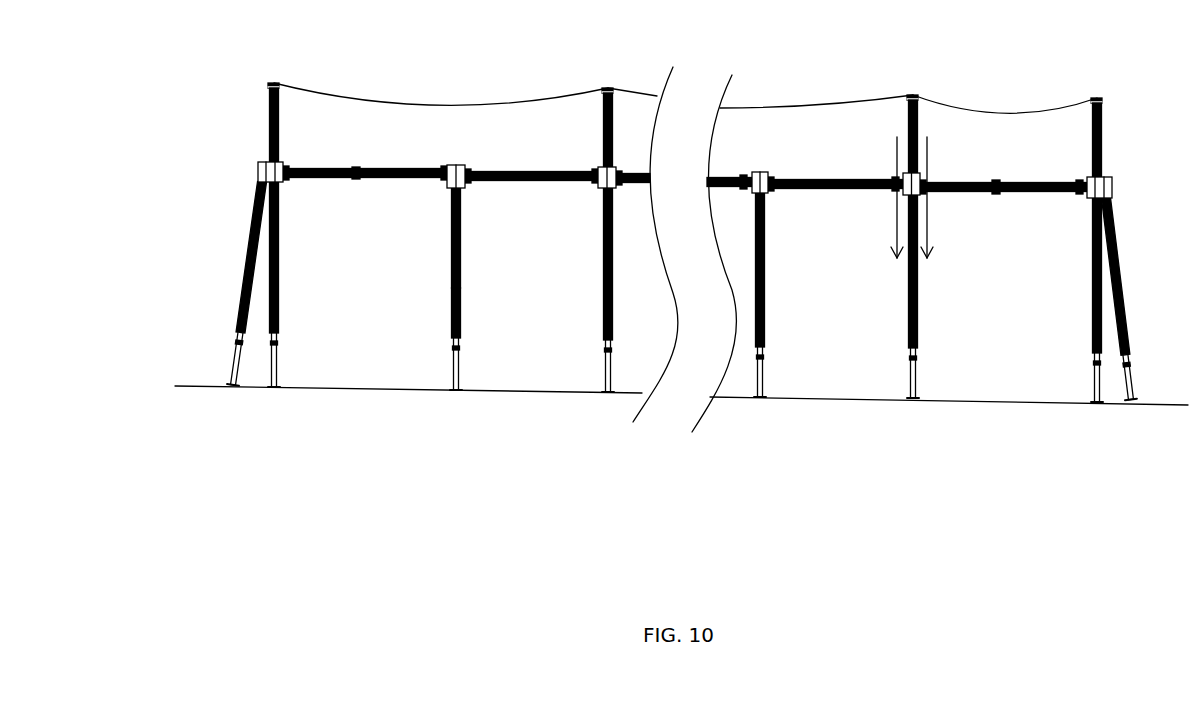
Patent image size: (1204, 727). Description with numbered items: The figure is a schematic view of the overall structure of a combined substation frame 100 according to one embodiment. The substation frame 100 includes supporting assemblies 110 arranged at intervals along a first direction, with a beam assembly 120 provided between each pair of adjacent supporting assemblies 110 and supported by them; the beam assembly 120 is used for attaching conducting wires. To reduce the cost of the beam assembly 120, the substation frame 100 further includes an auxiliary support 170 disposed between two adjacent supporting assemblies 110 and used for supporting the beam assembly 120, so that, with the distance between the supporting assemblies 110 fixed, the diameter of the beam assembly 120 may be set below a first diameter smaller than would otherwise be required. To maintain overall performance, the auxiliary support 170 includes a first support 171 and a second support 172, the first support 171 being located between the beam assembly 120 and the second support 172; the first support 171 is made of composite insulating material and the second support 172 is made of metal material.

The substation frame 100 is at (515, 68).
The supporting assembly 110 is at (230, 263).
The beam assembly 120 is at (377, 205).
The auxiliary support 170 is at (438, 345).
The first support 171 is at (461, 295).
The second support 172 is at (457, 366).